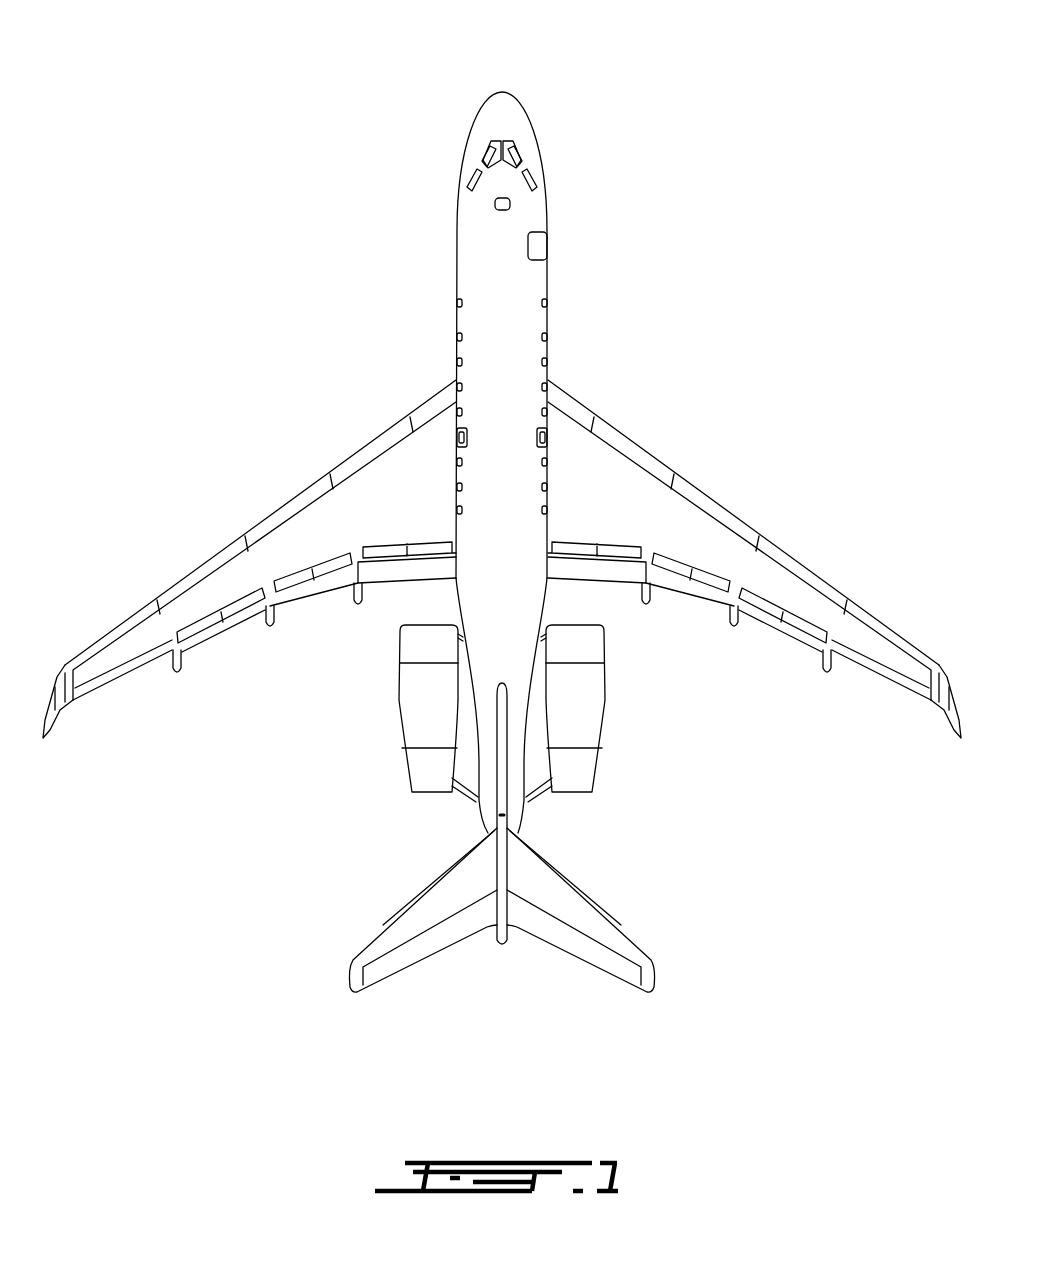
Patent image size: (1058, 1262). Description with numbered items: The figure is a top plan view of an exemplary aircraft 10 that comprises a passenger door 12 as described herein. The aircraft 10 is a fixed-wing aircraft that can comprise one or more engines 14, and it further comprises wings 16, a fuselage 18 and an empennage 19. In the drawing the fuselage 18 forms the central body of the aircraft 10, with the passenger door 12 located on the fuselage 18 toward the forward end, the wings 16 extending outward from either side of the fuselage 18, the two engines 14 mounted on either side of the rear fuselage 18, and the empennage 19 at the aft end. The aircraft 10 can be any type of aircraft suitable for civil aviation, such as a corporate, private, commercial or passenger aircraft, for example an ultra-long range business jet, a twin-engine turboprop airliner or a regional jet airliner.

The aircraft 10 is at (822, 115).
The passenger door 12 is at (538, 243).
The engine 14 is at (413, 688).
The wing 16 is at (238, 498).
The fuselage 18 is at (513, 342).
The empennage 19 is at (648, 900).